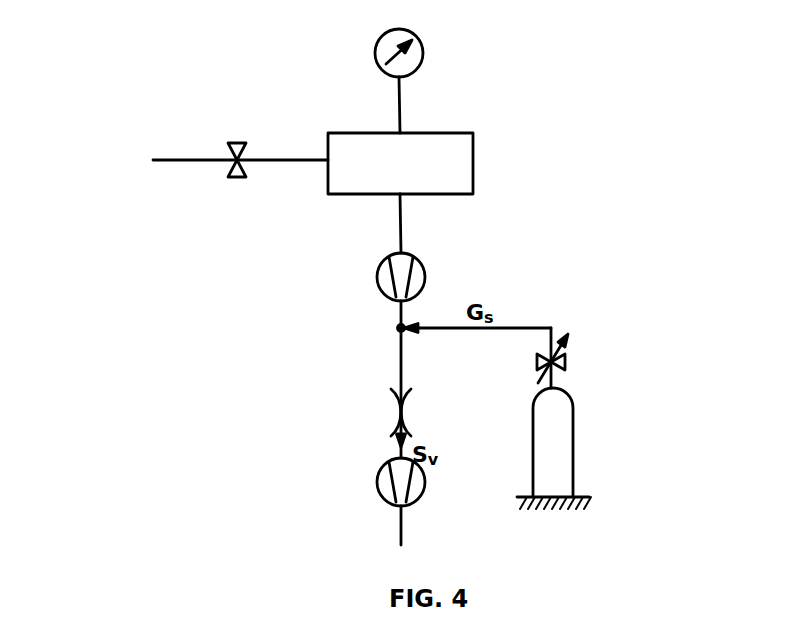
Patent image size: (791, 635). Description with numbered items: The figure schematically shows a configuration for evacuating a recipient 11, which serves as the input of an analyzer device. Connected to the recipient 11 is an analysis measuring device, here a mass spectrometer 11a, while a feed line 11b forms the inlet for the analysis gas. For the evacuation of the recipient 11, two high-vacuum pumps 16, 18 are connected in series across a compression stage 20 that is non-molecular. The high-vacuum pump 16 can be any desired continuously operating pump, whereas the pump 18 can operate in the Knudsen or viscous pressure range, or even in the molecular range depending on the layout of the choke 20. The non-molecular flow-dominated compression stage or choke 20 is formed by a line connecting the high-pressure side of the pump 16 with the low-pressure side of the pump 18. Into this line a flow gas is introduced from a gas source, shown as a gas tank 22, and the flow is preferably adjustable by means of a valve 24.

The recipient 11 is at (473, 150).
The mass spectrometer 11a is at (421, 45).
The feed line 11b is at (257, 160).
The high-vacuum pump 16 is at (424, 267).
The high-vacuum pump 18 is at (423, 491).
The compression stage 20 is at (398, 411).
The gas tank 22 is at (573, 433).
The valve 24 is at (556, 361).